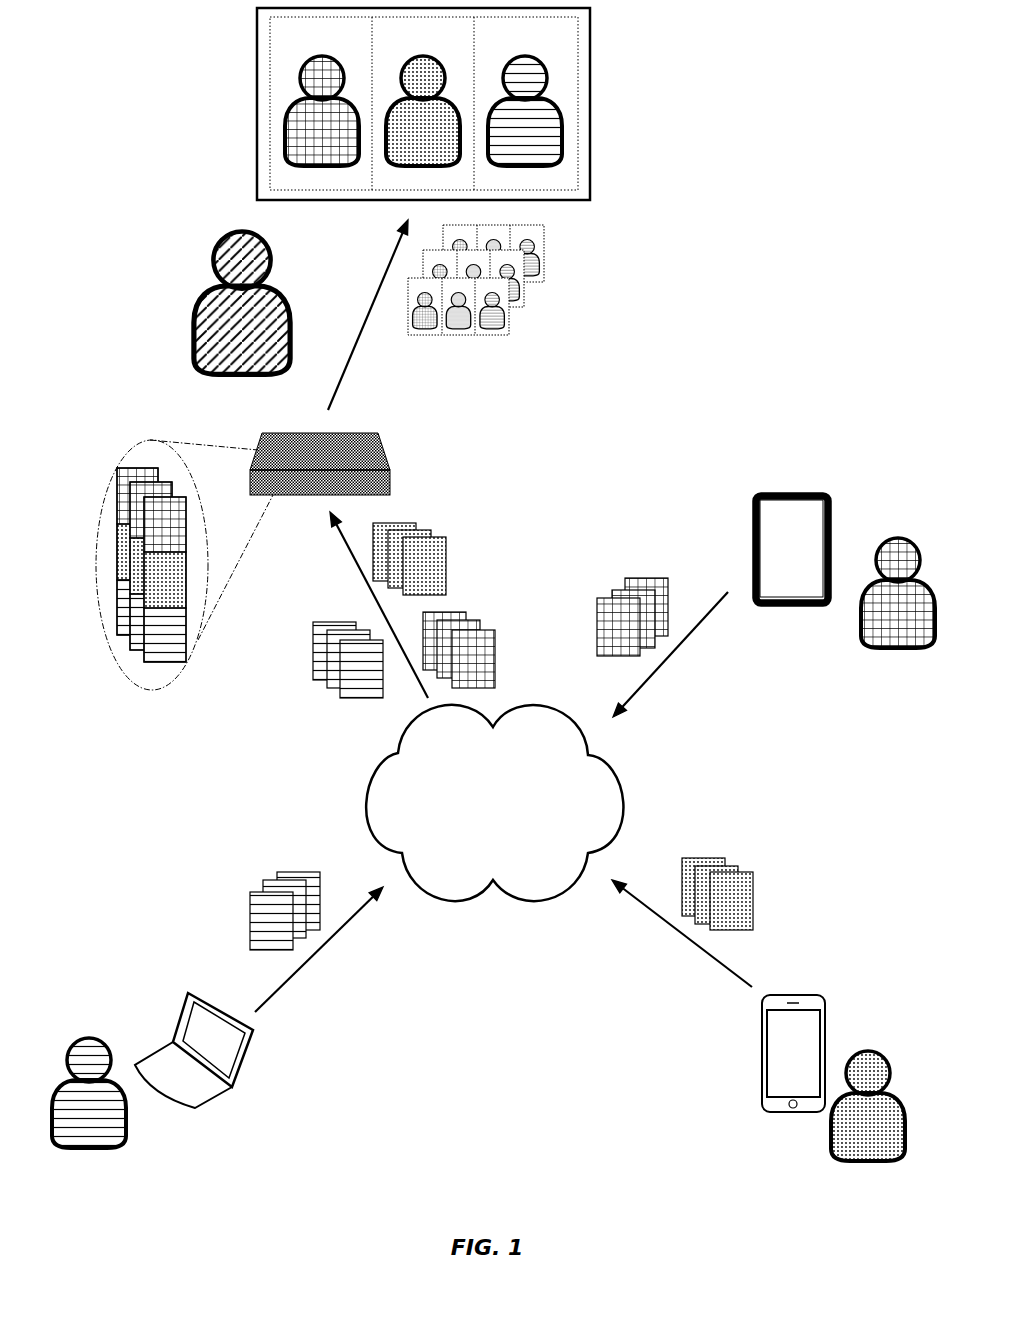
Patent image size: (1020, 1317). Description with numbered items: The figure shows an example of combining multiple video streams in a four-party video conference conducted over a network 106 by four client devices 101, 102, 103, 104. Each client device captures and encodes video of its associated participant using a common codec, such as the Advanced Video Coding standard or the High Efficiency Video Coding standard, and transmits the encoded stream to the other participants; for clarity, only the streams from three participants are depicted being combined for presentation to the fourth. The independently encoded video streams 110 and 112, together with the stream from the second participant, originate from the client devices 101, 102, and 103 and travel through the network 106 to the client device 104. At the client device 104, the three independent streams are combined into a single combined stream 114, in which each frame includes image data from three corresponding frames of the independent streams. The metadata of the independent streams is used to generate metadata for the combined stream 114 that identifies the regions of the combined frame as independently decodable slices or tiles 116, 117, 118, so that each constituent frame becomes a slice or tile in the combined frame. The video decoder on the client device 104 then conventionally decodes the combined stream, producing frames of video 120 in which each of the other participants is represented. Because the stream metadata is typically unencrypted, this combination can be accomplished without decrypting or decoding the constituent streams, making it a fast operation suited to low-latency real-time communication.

The client device 101 is at (182, 1021).
The client device 102 is at (831, 1033).
The client device 103 is at (748, 529).
The client device 104 is at (349, 440).
The network 106 is at (494, 803).
The encoded video stream 110 is at (276, 786).
The encoded video stream 112 is at (545, 607).
The combined stream 114 is at (145, 575).
The independently decodable slice or tile 116 is at (94, 601).
The independently decodable slice or tile 117 is at (94, 545).
The independently decodable slice or tile 118 is at (94, 493).
The frames of video 120 is at (460, 171).